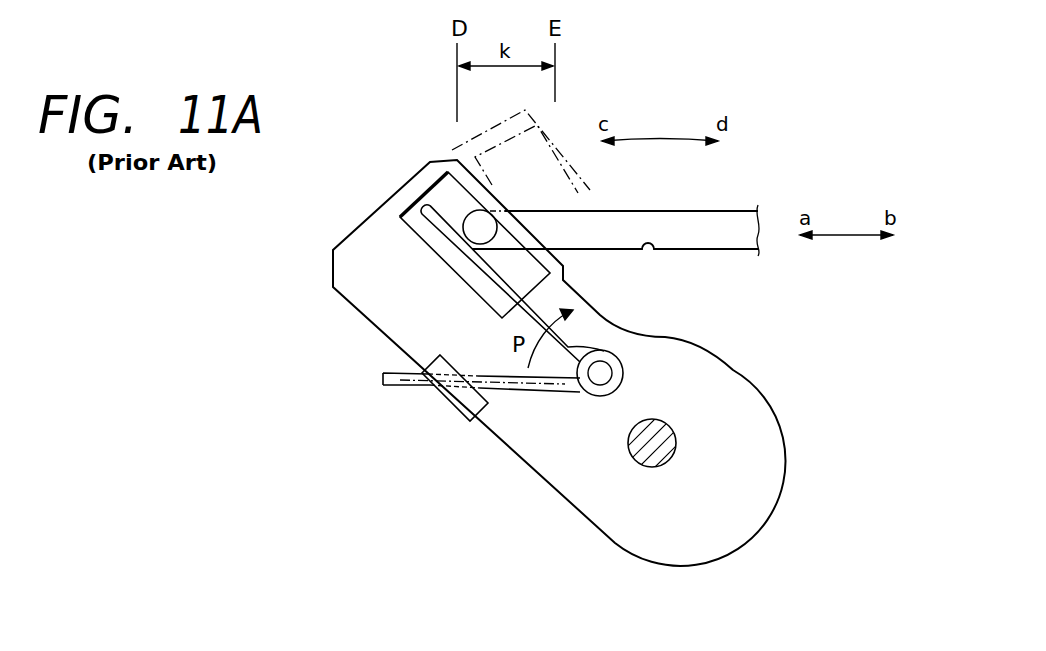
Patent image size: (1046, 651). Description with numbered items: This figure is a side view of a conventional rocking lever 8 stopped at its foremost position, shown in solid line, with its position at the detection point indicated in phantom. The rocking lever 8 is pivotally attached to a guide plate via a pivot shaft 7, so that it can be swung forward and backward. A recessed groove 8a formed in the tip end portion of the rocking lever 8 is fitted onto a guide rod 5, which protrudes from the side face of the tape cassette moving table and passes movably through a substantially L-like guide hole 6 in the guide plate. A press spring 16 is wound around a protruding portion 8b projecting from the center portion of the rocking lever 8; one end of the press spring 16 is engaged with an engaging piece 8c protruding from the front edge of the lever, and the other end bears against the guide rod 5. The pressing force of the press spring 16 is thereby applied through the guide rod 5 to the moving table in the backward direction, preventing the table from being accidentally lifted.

The guide rod 5 is at (482, 227).
The guide hole 6 is at (652, 250).
The pivot shaft 7 is at (666, 452).
The rocking lever 8 is at (517, 460).
The recessed groove 8a is at (416, 232).
The protruding portion 8b is at (605, 373).
The engaging piece 8c is at (462, 412).
The press spring 16 is at (465, 263).